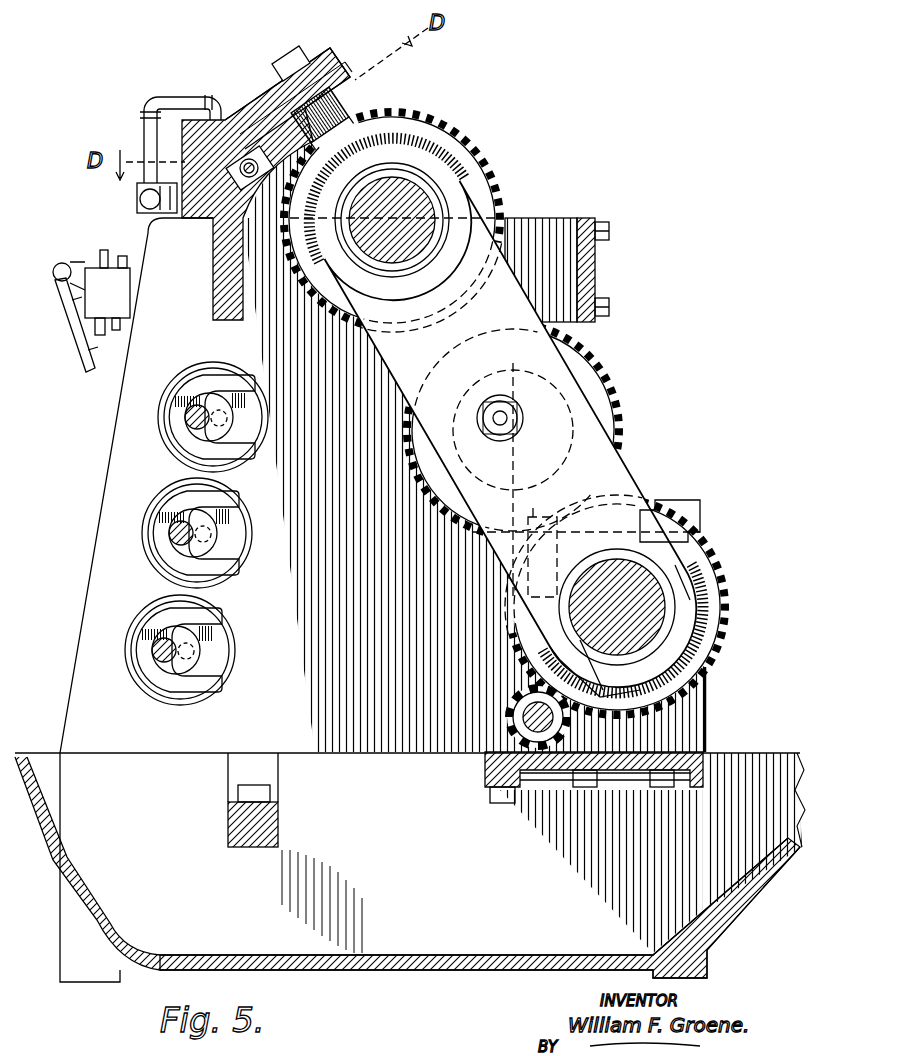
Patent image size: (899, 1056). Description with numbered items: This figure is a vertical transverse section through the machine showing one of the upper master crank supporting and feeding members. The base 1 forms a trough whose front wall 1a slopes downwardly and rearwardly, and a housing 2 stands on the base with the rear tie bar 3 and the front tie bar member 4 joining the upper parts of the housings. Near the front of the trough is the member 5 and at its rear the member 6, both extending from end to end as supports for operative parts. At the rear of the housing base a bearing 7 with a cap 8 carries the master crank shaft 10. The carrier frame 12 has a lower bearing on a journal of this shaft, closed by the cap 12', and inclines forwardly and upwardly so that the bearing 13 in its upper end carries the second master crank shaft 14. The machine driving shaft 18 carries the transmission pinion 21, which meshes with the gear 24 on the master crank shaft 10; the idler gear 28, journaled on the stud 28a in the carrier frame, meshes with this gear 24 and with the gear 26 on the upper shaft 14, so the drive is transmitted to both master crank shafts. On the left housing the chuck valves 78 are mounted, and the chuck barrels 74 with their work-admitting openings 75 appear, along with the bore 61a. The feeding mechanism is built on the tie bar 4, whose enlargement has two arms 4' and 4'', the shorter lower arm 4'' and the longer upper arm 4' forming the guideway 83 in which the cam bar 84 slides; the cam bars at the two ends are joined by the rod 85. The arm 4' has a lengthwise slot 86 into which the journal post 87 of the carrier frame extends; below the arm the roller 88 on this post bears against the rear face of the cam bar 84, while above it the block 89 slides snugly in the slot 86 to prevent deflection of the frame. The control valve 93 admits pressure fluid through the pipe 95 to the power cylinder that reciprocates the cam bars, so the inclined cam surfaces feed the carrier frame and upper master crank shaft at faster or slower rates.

The base 1 is at (60, 912).
The front wall 1a is at (70, 855).
The housing 2 is at (95, 617).
The tie bar 3 is at (593, 273).
The member 4 is at (256, 184).
The arm 4' is at (342, 44).
The arm 4'' is at (263, 206).
The member 5 is at (236, 828).
The member 6 is at (700, 752).
The bearing 7 is at (706, 700).
The cap 8 is at (700, 533).
The master crank shaft 10 is at (650, 603).
The carrier frame 12 is at (502, 412).
The cap 12' is at (666, 631).
The bearing 13 is at (392, 275).
The second master crank shaft 14 is at (412, 240).
The machine driving shaft 18 is at (525, 716).
The transmission pinion 21 is at (516, 724).
The gear 24 is at (716, 575).
The gear 26 is at (492, 183).
The idler gear 28 is at (596, 385).
The stud 28a is at (522, 422).
The fixture pin bore 61a is at (190, 432).
The barrel 74 is at (196, 378).
The opening 75 is at (172, 418).
The valve 78 is at (91, 315).
The guideway 83 is at (233, 157).
The cam bar 84 is at (270, 147).
The rod 85 is at (264, 161).
The slot 86 is at (295, 82).
The journal post 87 is at (357, 142).
The roller 88 is at (340, 112).
The block 89 is at (345, 62).
The control valve 93 is at (140, 208).
The pipe 95 is at (183, 95).